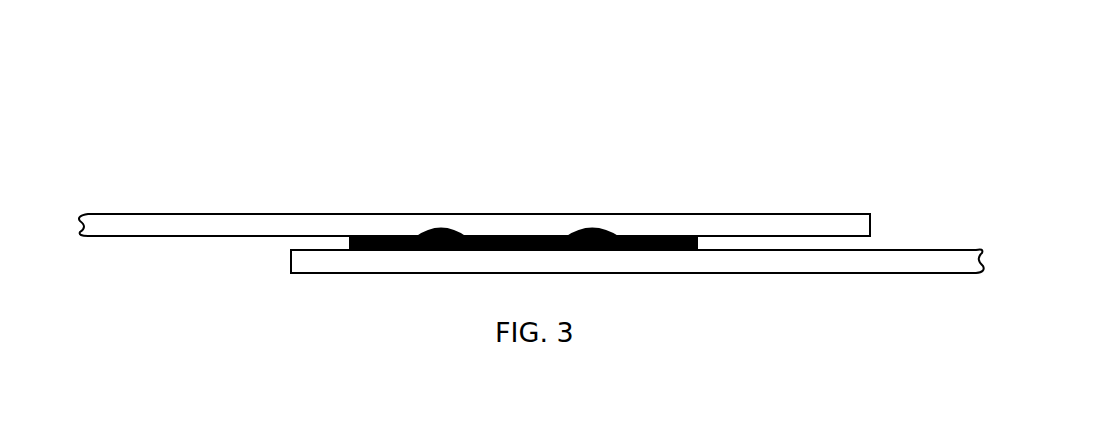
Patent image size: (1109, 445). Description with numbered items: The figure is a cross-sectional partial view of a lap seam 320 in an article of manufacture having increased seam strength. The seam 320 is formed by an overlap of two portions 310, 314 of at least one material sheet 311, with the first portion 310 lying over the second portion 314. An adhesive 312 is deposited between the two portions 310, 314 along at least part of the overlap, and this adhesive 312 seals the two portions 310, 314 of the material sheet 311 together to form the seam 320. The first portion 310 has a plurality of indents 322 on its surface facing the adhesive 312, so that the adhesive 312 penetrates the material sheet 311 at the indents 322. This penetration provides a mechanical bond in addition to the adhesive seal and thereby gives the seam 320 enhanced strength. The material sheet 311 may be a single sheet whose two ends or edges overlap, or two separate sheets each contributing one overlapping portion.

The first portion of the material sheet 310 is at (713, 213).
The material sheet 311 is at (270, 228).
The adhesive 312 is at (520, 237).
The second portion of the material sheet 314 is at (782, 262).
The seam 320 is at (366, 88).
The indents 322 is at (438, 233).